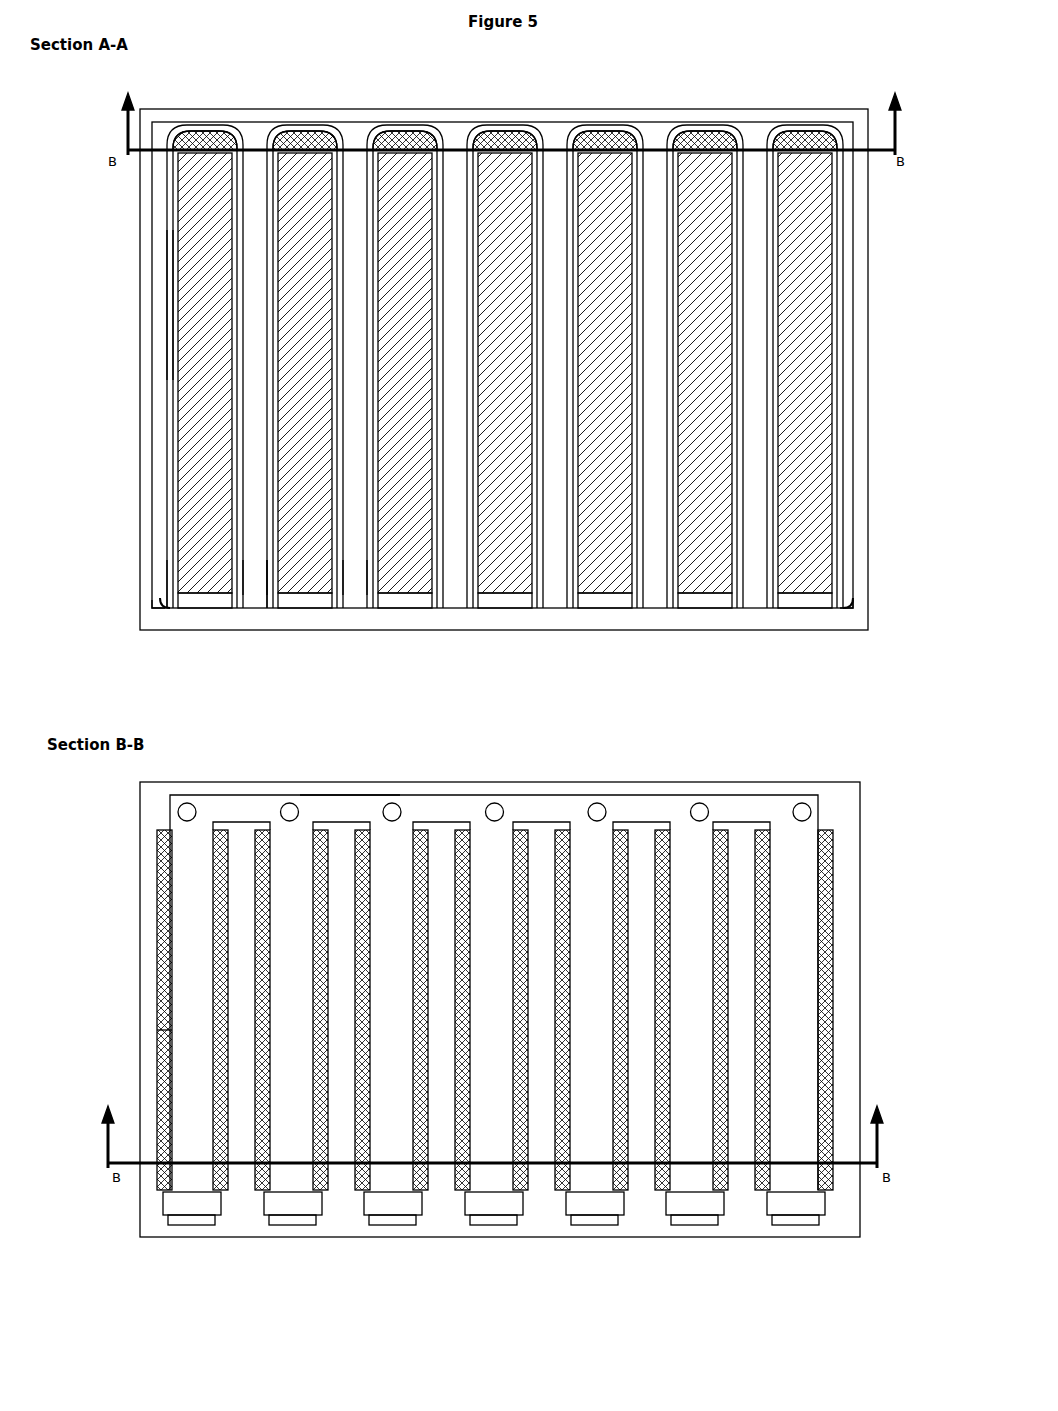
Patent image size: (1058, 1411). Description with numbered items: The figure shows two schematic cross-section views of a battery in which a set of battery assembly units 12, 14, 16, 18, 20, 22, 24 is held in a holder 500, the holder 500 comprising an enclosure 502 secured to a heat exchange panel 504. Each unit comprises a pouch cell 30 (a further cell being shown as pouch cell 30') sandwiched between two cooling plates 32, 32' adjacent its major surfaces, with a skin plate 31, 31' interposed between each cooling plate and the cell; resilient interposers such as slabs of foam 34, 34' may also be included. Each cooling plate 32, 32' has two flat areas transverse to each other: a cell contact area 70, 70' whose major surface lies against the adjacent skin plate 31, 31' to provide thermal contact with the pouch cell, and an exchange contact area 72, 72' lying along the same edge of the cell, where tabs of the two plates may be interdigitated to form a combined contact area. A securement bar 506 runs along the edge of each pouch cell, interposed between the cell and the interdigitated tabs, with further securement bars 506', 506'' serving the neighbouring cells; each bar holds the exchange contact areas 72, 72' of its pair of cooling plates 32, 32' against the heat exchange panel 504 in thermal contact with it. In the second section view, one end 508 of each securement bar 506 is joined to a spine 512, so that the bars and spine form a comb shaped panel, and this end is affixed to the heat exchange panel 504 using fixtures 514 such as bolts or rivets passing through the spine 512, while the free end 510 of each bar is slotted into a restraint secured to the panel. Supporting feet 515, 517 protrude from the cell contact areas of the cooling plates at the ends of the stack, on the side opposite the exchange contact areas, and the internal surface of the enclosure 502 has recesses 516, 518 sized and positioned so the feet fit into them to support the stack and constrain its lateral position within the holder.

The holder 500 is at (112, 523).
The enclosure 502 is at (152, 545).
The heat exchange panel 504 is at (468, 118).
The securement bar 506 is at (165, 627).
The securement bar 506' is at (291, 336).
The securement bar 506'' is at (397, 336).
The end of securement bar 508 is at (170, 822).
The free end of securement bar 510 is at (163, 1214).
The spine 512 is at (345, 800).
The fixtures 514 is at (190, 803).
The supporting foot 515 is at (165, 602).
The recess 516 is at (152, 624).
The supporting foot 517 is at (856, 606).
The bottom right corner 518 is at (848, 618).
The exchange contact area 72 is at (205, 104).
The exchange contact area 72' is at (305, 104).
The pouch cell 30 is at (158, 373).
The second battery cell body 30' is at (305, 373).
The cell contact area 70 is at (132, 265).
The wrapper layer 70' is at (147, 265).
The skin plate 31 is at (127, 340).
The skin plate 31' is at (132, 340).
The cooling plate 32 is at (136, 795).
The cooling plate 32' is at (240, 624).
The slab of foam 34 is at (252, 615).
The slab of foam 34' is at (354, 620).
The battery assembly unit 12 is at (205, 610).
The battery assembly unit 14 is at (303, 610).
The battery assembly unit 16 is at (407, 610).
The battery assembly unit 18 is at (502, 610).
The battery assembly unit 20 is at (604, 610).
The battery assembly unit 22 is at (708, 610).
The battery assembly unit 24 is at (801, 610).